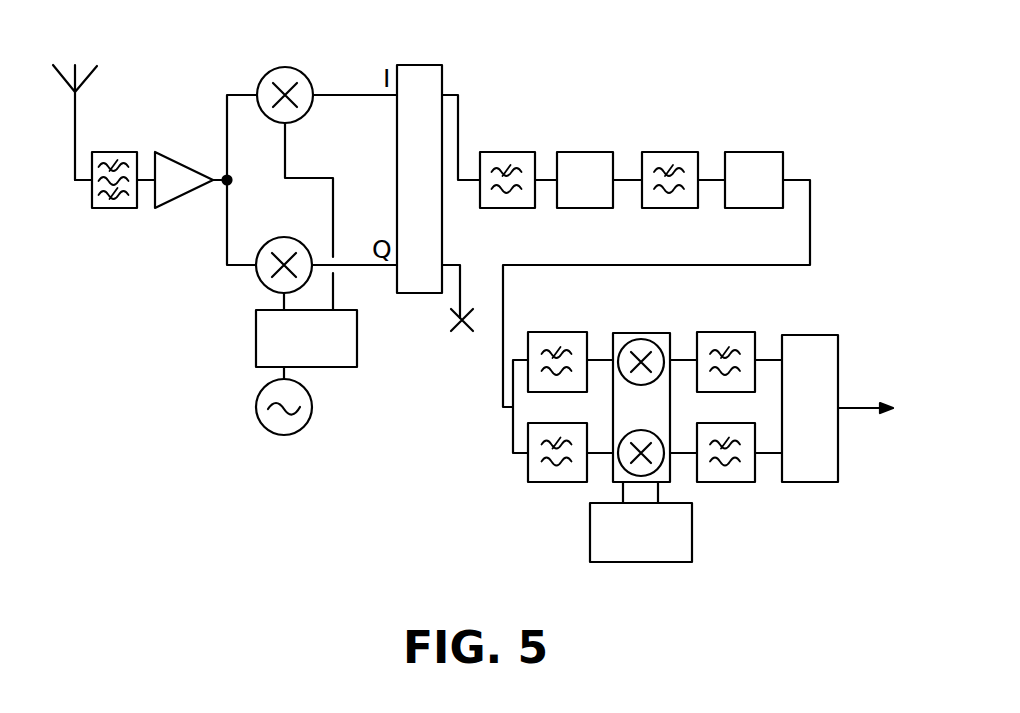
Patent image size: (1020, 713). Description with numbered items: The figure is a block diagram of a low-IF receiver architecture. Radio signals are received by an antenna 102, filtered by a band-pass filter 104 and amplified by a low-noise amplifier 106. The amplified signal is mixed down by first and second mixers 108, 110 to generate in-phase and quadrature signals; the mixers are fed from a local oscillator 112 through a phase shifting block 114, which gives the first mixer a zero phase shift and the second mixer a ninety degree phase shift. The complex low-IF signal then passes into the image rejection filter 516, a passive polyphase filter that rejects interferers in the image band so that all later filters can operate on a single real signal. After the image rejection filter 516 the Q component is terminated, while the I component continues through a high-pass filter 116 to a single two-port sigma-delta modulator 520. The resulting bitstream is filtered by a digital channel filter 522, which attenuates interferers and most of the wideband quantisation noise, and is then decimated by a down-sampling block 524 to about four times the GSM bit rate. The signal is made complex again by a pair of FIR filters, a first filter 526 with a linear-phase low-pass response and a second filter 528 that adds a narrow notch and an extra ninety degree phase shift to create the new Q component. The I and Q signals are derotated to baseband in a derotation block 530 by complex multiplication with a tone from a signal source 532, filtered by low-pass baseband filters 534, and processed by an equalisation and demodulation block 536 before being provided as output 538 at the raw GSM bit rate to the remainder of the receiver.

The antenna 102 is at (92, 76).
The band-pass filter 104 is at (108, 208).
The low-noise amplifier 106 is at (184, 190).
The first mixer 108 is at (275, 66).
The second mixer 110 is at (261, 275).
The local oscillator 112 is at (285, 434).
The phase shifting block 114 is at (263, 353).
The high-pass filter 116 is at (503, 154).
The image rejection filter 516 is at (415, 294).
The sigma-delta modulator 520 is at (582, 152).
The digital channel filter 522 is at (666, 152).
The down-sampling block 524 is at (749, 152).
The first filter 526 is at (552, 336).
The second filter 528 is at (552, 476).
The derotation block 530 is at (631, 336).
The signal source 532 is at (634, 563).
The low-pass baseband filters 534 is at (716, 336).
The equalisation and demodulation block 536 is at (799, 336).
The output 538 is at (858, 410).